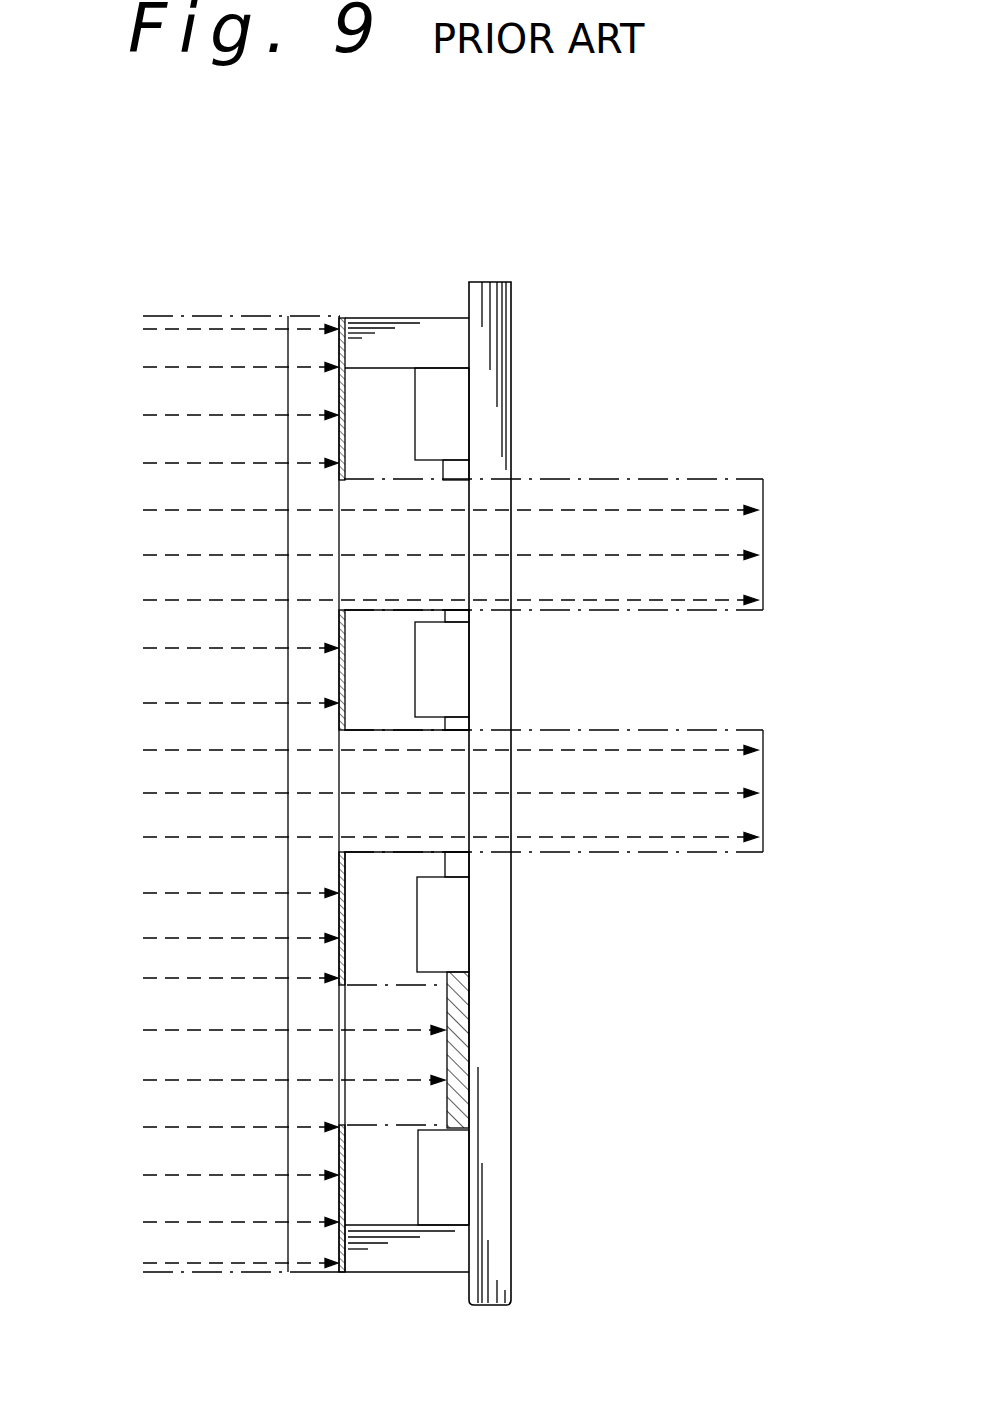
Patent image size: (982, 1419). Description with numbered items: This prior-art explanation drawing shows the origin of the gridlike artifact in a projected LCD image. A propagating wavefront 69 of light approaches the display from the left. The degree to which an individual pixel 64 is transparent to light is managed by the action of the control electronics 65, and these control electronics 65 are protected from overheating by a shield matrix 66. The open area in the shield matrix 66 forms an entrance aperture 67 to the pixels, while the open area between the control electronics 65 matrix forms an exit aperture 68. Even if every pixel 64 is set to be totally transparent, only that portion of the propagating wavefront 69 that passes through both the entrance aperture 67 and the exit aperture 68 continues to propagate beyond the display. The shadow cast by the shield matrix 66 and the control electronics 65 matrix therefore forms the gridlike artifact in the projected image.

The propagating wavefront 69 is at (125, 346).
The exit aperture 68 is at (457, 537).
The entrance aperture 67 is at (326, 538).
The shield matrix 66 is at (336, 652).
The control electronics 65 is at (450, 935).
The pixel 64 is at (463, 816).